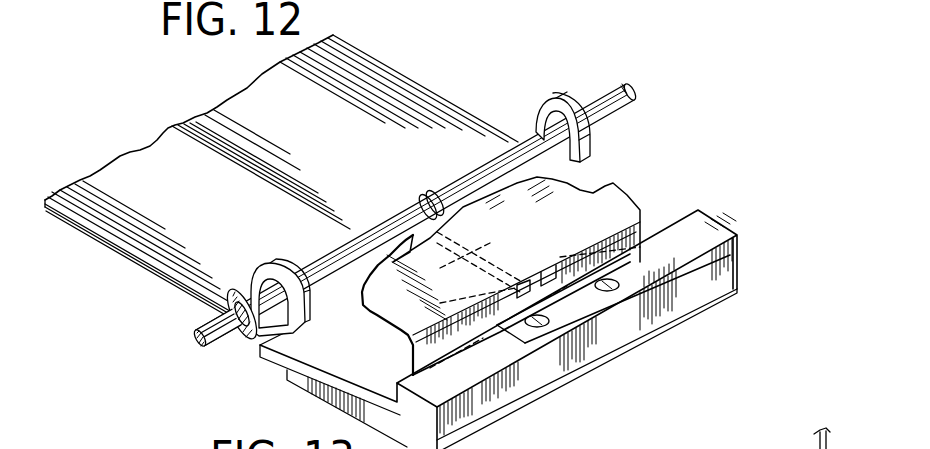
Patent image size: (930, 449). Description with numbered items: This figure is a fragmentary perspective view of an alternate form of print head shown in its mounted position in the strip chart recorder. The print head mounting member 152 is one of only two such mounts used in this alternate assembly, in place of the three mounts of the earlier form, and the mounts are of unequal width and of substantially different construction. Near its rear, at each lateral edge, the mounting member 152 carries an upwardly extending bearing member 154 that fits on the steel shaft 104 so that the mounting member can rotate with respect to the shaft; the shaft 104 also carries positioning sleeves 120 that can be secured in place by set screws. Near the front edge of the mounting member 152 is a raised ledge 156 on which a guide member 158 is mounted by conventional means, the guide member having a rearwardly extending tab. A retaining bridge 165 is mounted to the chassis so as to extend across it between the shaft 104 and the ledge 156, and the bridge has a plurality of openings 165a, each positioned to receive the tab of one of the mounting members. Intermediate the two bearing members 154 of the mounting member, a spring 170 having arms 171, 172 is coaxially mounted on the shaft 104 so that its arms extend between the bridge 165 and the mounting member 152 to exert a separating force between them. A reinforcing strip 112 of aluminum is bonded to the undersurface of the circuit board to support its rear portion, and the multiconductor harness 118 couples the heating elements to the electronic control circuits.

The shaft 104 is at (622, 89).
The reinforcing strip 112 is at (312, 395).
The multiconductor harness 118 is at (360, 73).
The positioning sleeves 120 is at (252, 287).
The print head mounting member 152 is at (702, 158).
The bearing member 154 is at (280, 275).
The raised ledge 156 is at (720, 220).
The guide member 158 is at (578, 307).
The retaining bridge 165 is at (598, 196).
The openings 165a is at (555, 277).
The spring 170 is at (400, 196).
The spring arm 171 is at (466, 262).
The spring arm 172 is at (490, 240).